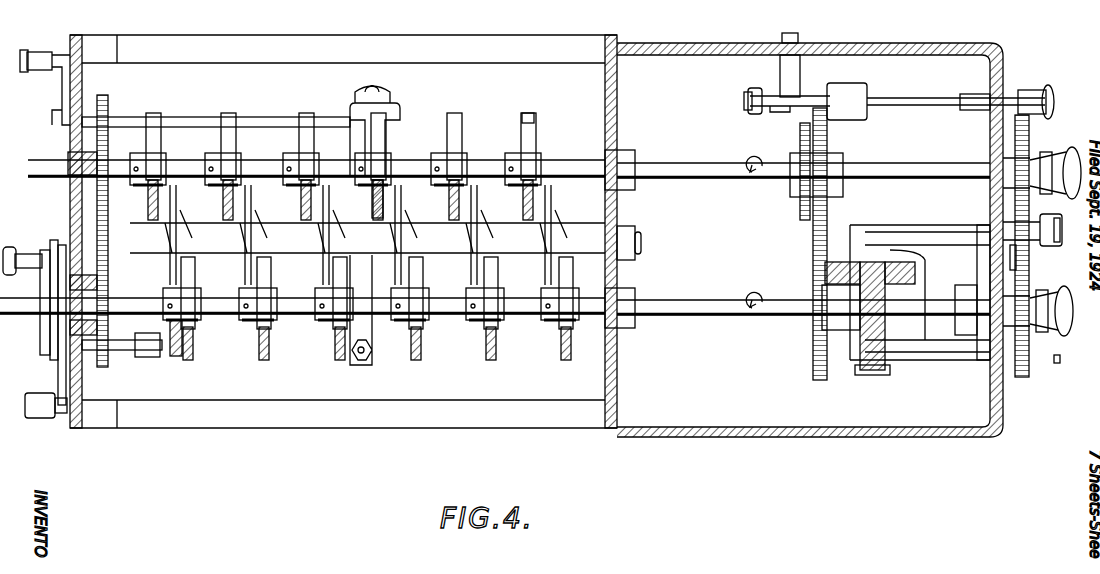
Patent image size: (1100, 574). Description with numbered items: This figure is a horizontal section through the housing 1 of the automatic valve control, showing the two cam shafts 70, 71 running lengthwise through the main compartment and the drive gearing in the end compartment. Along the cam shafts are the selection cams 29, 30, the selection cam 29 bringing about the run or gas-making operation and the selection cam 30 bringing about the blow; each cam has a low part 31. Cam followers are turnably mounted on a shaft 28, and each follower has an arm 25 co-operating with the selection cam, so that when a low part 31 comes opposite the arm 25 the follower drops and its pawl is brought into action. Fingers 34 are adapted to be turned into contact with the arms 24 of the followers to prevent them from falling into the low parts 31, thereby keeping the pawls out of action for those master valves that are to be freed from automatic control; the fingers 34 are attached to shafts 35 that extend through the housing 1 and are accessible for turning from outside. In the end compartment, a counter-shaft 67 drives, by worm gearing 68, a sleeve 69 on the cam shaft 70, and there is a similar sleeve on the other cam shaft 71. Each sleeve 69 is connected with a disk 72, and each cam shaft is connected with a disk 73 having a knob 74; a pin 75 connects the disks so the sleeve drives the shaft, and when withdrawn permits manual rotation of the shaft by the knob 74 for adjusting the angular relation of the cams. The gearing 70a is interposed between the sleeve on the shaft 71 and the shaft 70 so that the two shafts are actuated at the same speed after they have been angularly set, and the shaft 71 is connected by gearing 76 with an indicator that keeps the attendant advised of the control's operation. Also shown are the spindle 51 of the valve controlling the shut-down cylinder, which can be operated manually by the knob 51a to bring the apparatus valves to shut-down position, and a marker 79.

The housing 1 is at (900, 45).
The arm 24 is at (546, 184).
The arm 25 is at (528, 236).
The shaft 28 is at (638, 240).
The selection cam 29 is at (418, 360).
The selection cam 30 is at (462, 124).
The low part 31 is at (528, 118).
The finger 34 is at (400, 138).
The shaft 35 is at (185, 124).
The spindle 51 is at (750, 106).
The manual operating means 51a is at (1055, 96).
The counter-shaft 67 is at (875, 372).
The worm gearing 68 is at (822, 276).
The sleeve 69 is at (890, 172).
The cam shaft 70 is at (712, 322).
The gearing 70a is at (815, 250).
The cam shaft 71 is at (704, 172).
The disk 72 is at (1020, 378).
The disk 73 is at (1032, 378).
The knob 74 is at (1075, 150).
The pin 75 is at (1060, 242).
The gearing 76 is at (802, 138).
The marker 79 is at (1028, 245).